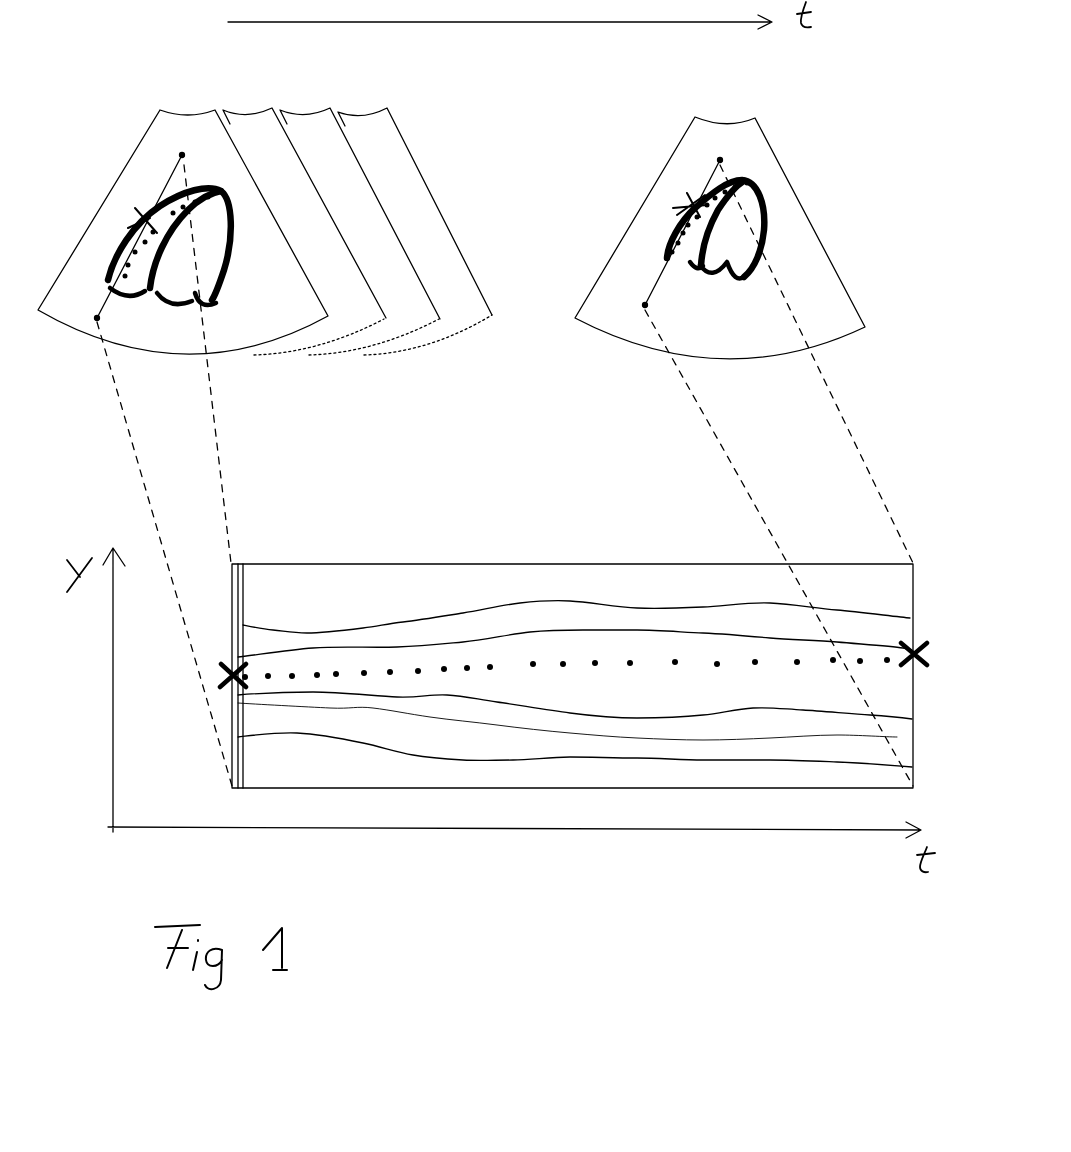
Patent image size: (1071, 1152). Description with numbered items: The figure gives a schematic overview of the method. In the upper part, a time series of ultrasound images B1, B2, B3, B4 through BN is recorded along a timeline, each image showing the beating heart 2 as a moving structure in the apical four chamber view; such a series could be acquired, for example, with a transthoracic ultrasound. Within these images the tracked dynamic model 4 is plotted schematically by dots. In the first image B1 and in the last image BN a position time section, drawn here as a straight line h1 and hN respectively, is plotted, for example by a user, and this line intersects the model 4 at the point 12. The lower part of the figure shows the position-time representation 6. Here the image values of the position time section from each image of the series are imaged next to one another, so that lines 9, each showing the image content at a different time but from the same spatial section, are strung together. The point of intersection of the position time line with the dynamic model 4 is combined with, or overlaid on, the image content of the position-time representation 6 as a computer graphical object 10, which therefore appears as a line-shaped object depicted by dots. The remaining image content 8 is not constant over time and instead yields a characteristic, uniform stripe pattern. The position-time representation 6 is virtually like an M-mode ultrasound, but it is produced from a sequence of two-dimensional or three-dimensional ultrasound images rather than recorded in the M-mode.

The first ultrasound image B1 is at (145, 125).
The second ultrasound image B2 is at (252, 115).
The third ultrasound image B3 is at (315, 115).
The fourth ultrasound image B4 is at (378, 112).
The last ultrasound image BN is at (733, 117).
The position time section in the first image h1 is at (163, 188).
The position time section in the last image hN is at (707, 183).
The heart 2 is at (875, 160).
The tracked dynamic model 4 is at (110, 277).
The point of intersection 12 is at (140, 222).
The position-time representation 6 is at (537, 563).
The remaining image content 8 is at (390, 622).
The lines 9 is at (243, 588).
The computer graphical object 10 is at (630, 663).